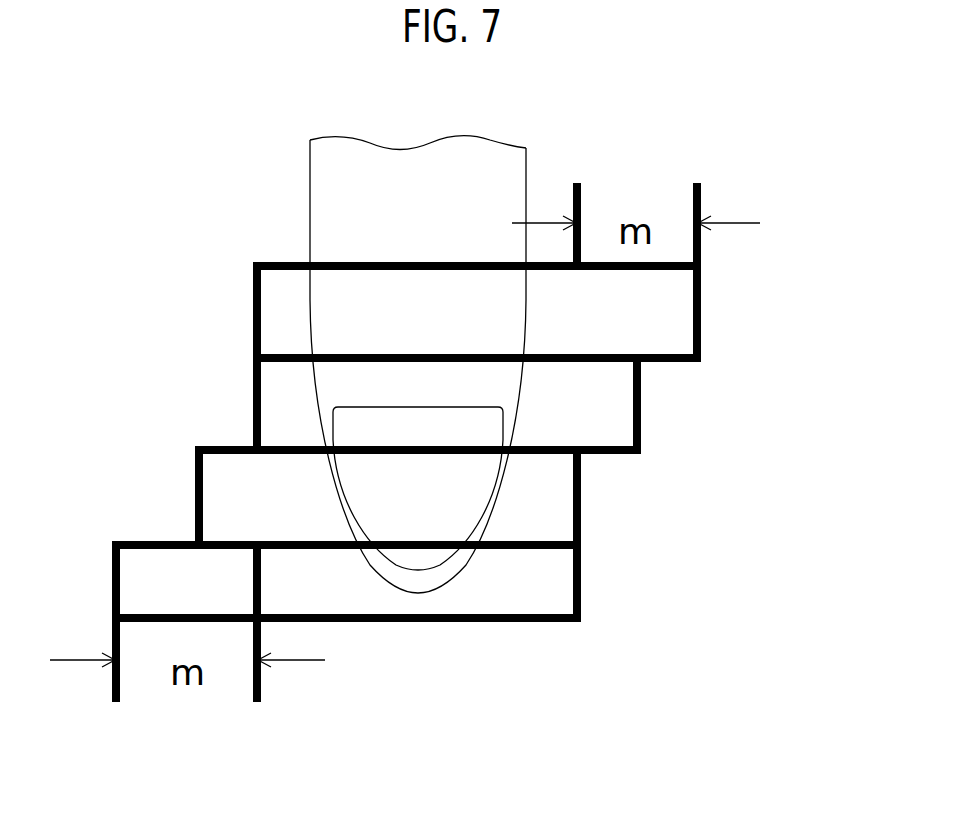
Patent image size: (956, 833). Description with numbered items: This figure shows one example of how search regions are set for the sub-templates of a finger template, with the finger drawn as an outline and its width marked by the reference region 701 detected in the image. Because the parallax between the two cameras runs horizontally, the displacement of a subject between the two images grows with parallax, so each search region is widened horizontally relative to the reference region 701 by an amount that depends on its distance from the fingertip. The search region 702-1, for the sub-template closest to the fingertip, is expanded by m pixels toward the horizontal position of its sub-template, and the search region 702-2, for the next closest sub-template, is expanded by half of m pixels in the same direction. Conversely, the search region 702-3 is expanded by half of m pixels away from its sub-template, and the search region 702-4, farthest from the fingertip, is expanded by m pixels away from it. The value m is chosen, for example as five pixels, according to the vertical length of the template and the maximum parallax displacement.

The reference region 701 is at (257, 710).
The search region 702-1 is at (617, 545).
The search region 702-2 is at (617, 450).
The search region 702-3 is at (703, 358).
The search region 702-4 is at (703, 266).